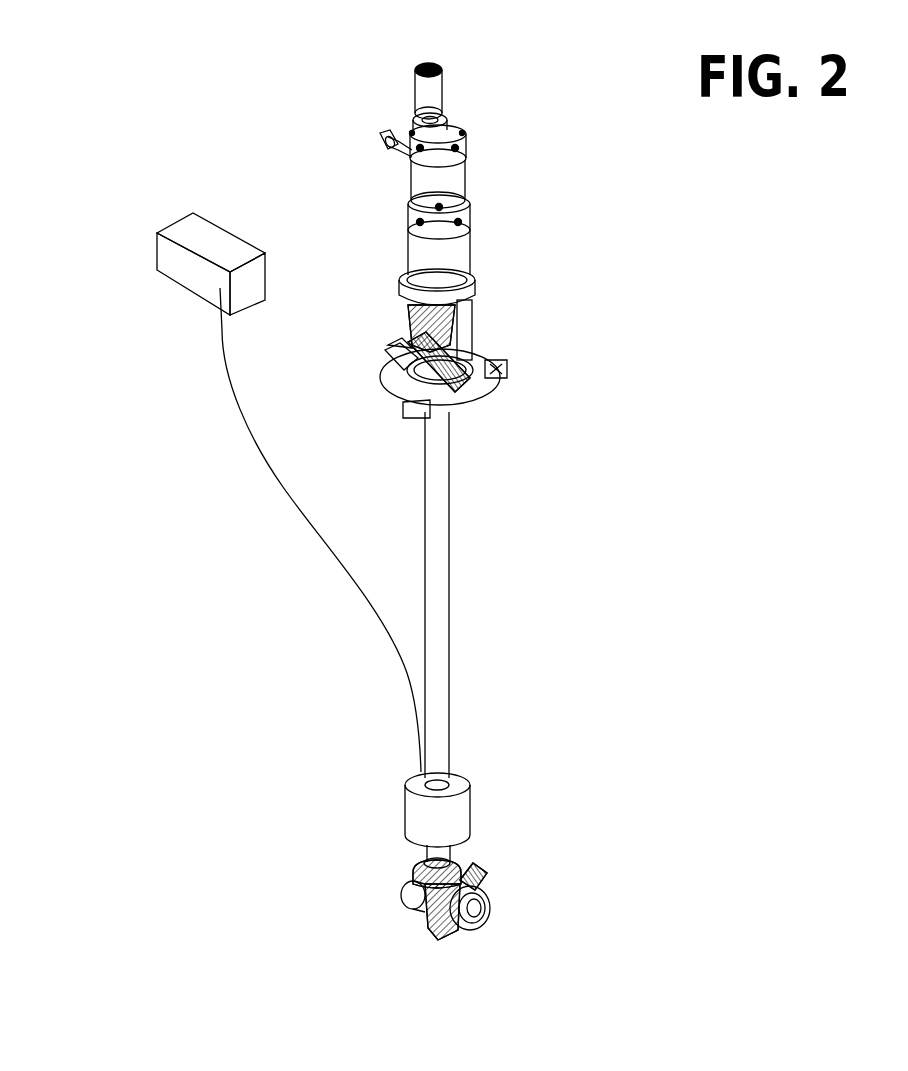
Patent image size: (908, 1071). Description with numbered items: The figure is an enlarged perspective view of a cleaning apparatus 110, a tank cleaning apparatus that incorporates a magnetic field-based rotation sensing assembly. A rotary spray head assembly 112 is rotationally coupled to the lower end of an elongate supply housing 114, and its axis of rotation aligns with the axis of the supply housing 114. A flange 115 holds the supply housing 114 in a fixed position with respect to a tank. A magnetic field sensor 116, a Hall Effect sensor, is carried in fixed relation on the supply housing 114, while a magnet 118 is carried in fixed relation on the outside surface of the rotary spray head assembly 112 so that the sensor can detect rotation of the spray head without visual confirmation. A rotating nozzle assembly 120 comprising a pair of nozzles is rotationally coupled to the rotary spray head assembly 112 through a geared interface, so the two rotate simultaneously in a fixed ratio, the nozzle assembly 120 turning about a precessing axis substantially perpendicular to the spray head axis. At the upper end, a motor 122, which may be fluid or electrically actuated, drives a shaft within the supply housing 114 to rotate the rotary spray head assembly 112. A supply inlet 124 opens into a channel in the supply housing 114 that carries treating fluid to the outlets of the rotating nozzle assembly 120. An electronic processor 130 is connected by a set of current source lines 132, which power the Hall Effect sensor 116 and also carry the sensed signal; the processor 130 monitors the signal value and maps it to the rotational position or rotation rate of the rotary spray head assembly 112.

The cleaning apparatus 110 is at (360, 233).
The rotary spray head assembly 112 is at (386, 899).
The supply housing 114 is at (442, 585).
The flange 115 is at (483, 358).
The magnetic field sensor 116 is at (463, 813).
The magnet 118 is at (412, 895).
The rotating nozzle assembly 120 is at (428, 928).
The motor 122 is at (442, 170).
The supply inlet 124 is at (470, 375).
The electronic processor 130 is at (160, 246).
The current source lines 132 is at (268, 455).